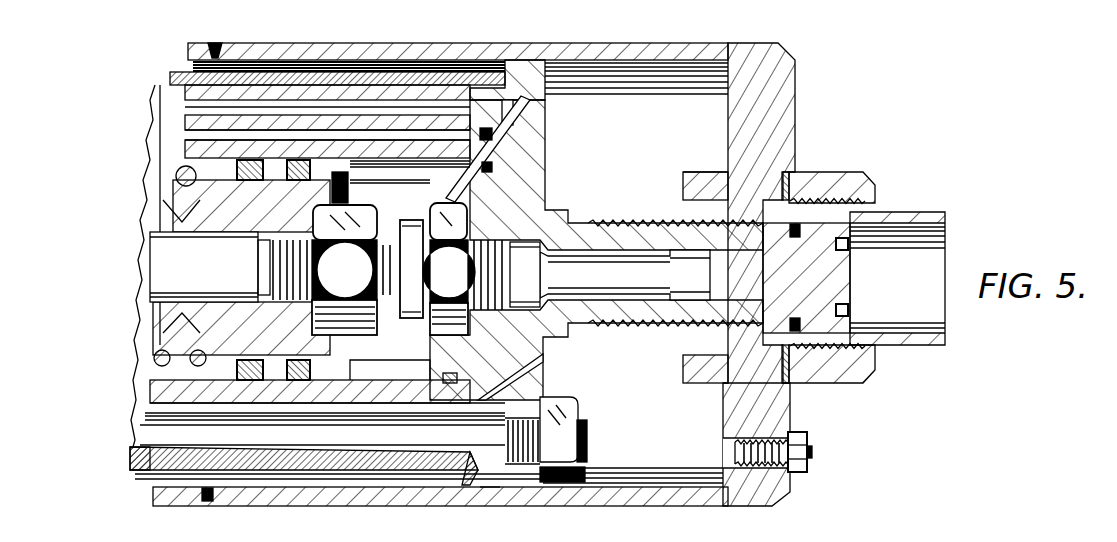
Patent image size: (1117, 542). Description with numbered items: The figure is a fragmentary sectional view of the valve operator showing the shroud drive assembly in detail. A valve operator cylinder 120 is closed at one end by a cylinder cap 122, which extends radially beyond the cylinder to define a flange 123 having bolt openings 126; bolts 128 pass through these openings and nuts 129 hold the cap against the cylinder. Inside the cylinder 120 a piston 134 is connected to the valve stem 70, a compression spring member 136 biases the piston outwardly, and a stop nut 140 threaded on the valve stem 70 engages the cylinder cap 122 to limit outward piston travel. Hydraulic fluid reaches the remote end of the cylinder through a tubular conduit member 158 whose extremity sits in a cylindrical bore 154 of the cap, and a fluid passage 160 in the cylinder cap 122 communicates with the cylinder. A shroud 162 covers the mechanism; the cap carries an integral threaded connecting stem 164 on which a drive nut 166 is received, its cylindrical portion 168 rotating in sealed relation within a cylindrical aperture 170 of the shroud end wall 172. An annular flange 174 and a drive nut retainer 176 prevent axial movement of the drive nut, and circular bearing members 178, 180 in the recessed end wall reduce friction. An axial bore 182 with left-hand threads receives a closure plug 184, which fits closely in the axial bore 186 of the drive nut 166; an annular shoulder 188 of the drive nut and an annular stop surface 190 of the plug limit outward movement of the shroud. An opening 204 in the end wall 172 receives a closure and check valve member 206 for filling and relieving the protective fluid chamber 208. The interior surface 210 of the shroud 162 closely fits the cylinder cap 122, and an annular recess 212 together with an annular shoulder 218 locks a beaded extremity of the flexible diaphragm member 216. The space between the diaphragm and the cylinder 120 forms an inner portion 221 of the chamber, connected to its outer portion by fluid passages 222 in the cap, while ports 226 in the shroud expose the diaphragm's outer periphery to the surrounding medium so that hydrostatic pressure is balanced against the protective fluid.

The valve stem 70 is at (222, 271).
The valve operator cylinder 120 is at (197, 150).
The cylinder cap 122 is at (512, 165).
The flange 123 is at (527, 70).
The bolt openings 126 is at (508, 425).
The bolts 128 is at (367, 433).
The nuts 129 is at (575, 440).
The piston 134 is at (188, 338).
The compression spring member 136 is at (178, 172).
The stop nut 140 is at (433, 215).
The cylindrical bore 154 is at (514, 111).
The tubular conduit member 158 is at (300, 93).
The fluid passage 160 is at (500, 190).
The shroud 162 is at (648, 53).
The connecting stem 164 is at (634, 312).
The drive nut 166 is at (703, 361).
The cylindrical portion 168 is at (742, 388).
The cylindrical aperture 170 is at (720, 224).
The end wall 172 is at (768, 122).
The annular flange 174 is at (717, 180).
The drive nut retainer 176 is at (863, 187).
The circular bearing member 178 is at (712, 176).
The circular bearing member 180 is at (795, 187).
The axial bore 182 is at (618, 294).
The closure plug 184 is at (812, 290).
The axial bore 186 is at (878, 332).
The annular shoulder 188 is at (762, 224).
The annular stop surface 190 is at (762, 324).
The opening 204 is at (736, 458).
The closure and check valve member 206 is at (798, 473).
The protective fluid chamber 208 is at (696, 128).
The interior surface 210 is at (598, 480).
The annular recess 212 is at (492, 493).
The flexible diaphragm member 216 is at (137, 455).
The annular shoulder 218 is at (477, 484).
The inner portion 221 is at (432, 385).
The fluid passages 222 is at (500, 384).
The ports 226 is at (207, 500).